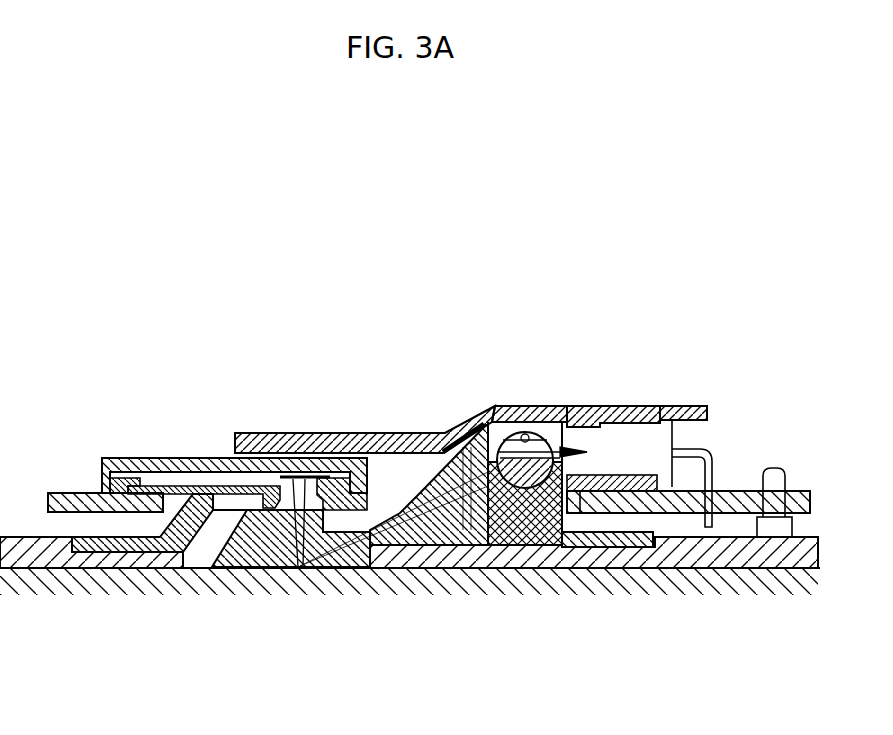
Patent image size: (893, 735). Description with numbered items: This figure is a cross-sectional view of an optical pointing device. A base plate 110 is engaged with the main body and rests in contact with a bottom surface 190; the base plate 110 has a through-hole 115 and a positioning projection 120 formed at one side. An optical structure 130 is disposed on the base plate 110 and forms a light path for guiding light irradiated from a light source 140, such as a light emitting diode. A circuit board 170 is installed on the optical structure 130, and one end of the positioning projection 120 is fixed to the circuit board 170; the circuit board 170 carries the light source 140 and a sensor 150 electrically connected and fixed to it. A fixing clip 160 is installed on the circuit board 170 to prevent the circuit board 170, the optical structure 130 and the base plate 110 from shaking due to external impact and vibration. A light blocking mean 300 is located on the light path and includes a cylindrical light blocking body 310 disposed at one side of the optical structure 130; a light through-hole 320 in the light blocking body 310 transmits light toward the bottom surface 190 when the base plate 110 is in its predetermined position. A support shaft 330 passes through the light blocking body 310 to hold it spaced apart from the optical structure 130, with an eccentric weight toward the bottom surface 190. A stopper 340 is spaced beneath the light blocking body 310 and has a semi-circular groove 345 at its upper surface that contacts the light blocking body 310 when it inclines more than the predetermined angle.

The base plate 110 is at (189, 560).
The through-hole 115 is at (268, 553).
The positioning projection 120 is at (773, 483).
The optical structure 130 is at (230, 505).
The light source 140 is at (663, 437).
The sensor 150 is at (170, 458).
The fixing clip 160 is at (618, 405).
The circuit board 170 is at (63, 500).
The bottom surface 190 is at (410, 636).
The light blocking mean 300 is at (567, 334).
The light blocking body 310 is at (488, 408).
The light through-hole 320 is at (565, 417).
The support shaft 330 is at (523, 434).
The stopper 340 is at (433, 465).
The semi-circular groove 345 is at (468, 436).